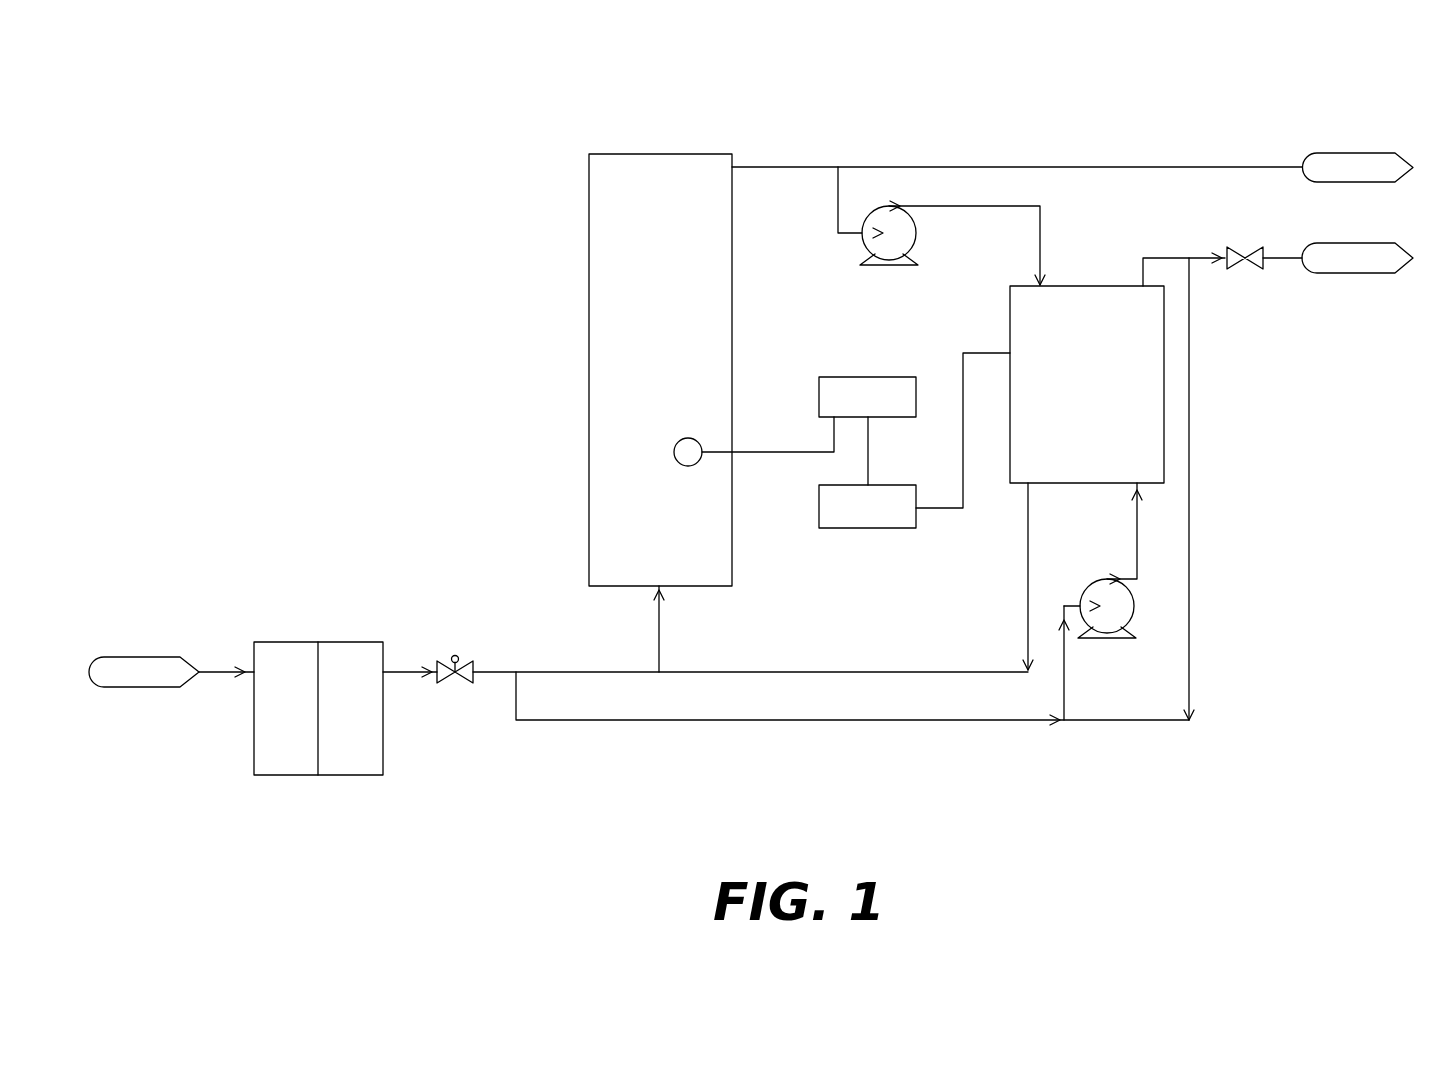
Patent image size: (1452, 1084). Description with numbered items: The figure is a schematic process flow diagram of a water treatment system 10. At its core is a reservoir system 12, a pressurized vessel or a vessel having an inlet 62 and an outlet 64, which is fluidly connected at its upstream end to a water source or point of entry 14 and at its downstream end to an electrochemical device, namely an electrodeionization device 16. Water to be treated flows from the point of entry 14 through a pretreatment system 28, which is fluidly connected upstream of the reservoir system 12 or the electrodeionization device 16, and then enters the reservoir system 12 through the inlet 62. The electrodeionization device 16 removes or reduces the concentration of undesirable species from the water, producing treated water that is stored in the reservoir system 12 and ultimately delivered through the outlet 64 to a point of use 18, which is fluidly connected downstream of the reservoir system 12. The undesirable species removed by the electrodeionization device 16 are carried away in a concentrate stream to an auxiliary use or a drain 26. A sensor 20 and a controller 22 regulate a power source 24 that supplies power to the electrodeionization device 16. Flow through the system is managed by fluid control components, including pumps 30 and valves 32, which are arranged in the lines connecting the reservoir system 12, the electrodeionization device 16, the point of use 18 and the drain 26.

The water treatment system 10 is at (410, 149).
The reservoir system 12 is at (589, 280).
The point of entry 14 is at (110, 657).
The electrodeionization device 16 is at (1012, 485).
The point of use 18 is at (1316, 154).
The sensor 20 is at (676, 446).
The controller 22 is at (884, 377).
The power source 24 is at (852, 529).
The drain 26 is at (1358, 274).
The pretreatment system 28 is at (385, 735).
The pump 30 is at (916, 237).
The valve 32 is at (1238, 265).
The inlet 62 is at (661, 584).
The outlet 64 is at (734, 166).